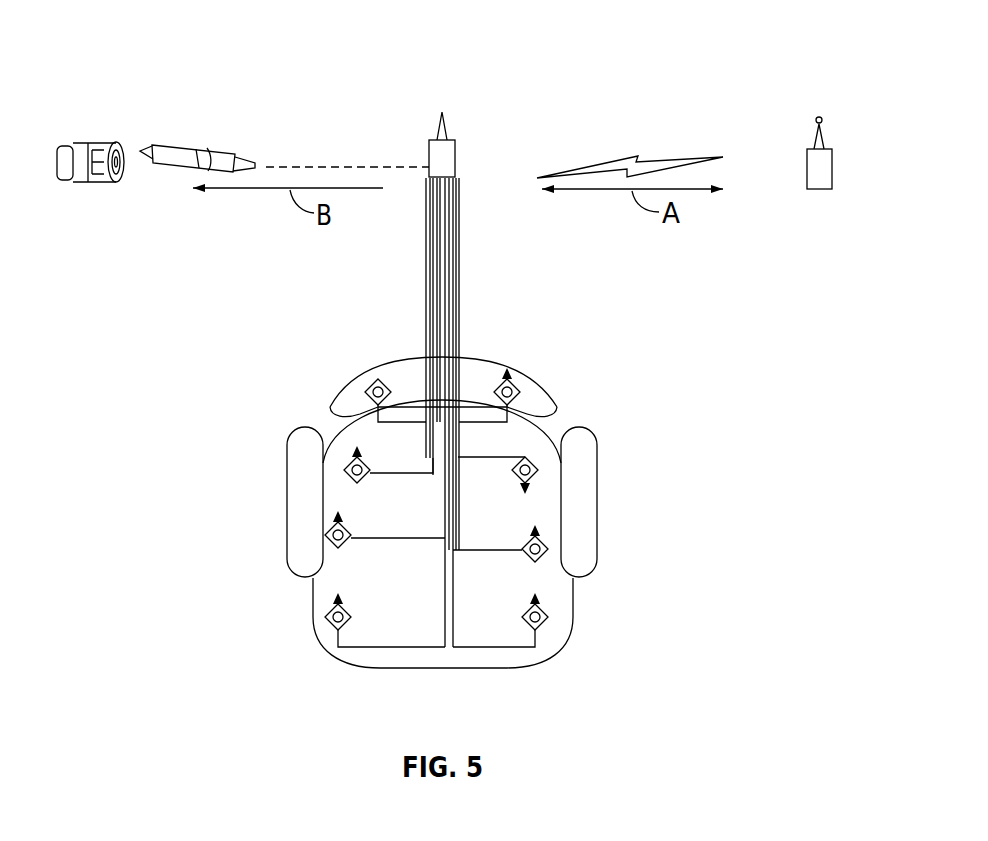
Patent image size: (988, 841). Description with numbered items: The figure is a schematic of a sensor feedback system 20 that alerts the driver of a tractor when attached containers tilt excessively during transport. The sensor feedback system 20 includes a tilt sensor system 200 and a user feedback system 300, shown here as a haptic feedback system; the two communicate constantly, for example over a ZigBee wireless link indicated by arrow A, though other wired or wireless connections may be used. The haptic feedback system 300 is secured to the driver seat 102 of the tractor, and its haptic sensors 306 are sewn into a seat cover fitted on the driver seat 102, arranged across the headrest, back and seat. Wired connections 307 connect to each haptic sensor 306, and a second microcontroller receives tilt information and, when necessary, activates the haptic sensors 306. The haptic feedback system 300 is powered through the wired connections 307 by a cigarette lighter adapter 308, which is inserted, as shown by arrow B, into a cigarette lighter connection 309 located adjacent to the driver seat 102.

The sensor feedback system 20 is at (105, 51).
The driver seat 102 is at (457, 657).
The tilt sensor system 200 is at (836, 172).
The user feedback system 300 is at (462, 155).
The haptic sensors 306 is at (366, 389).
The wired connections 307 is at (350, 166).
The cigarette lighter adapter 308 is at (173, 152).
The cigarette lighter connection 309 is at (73, 145).